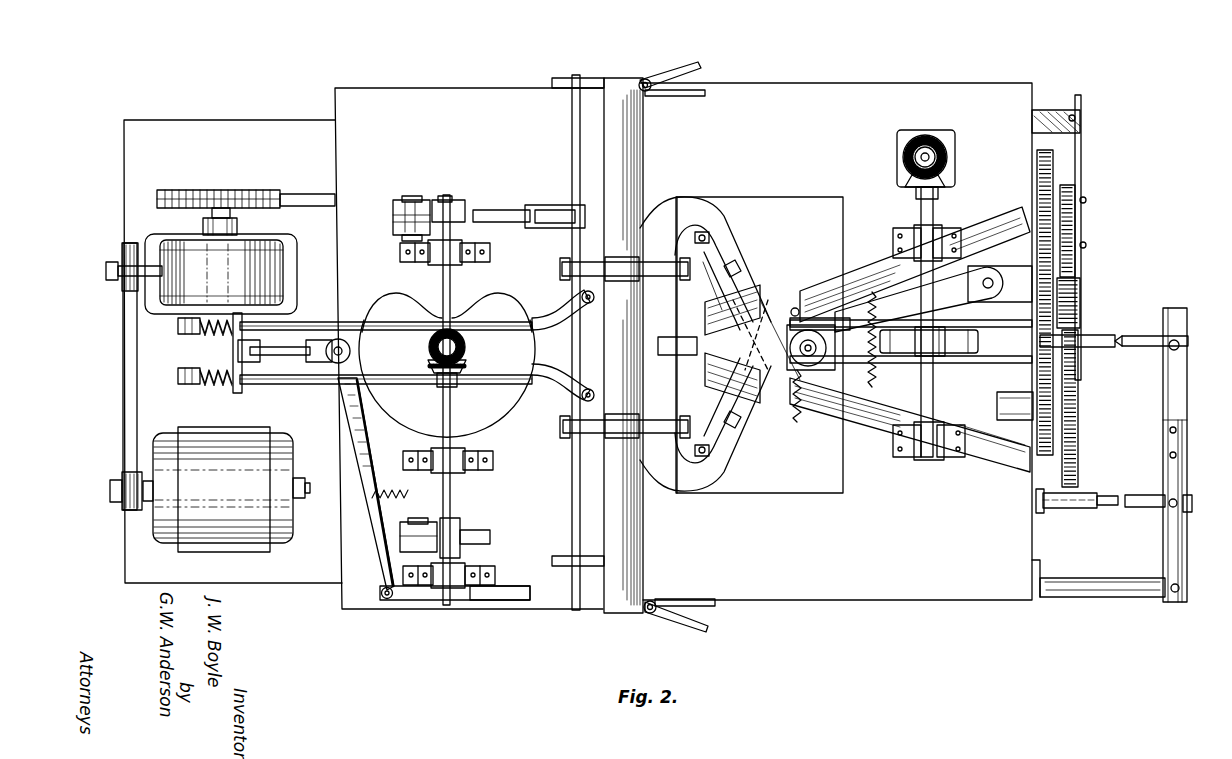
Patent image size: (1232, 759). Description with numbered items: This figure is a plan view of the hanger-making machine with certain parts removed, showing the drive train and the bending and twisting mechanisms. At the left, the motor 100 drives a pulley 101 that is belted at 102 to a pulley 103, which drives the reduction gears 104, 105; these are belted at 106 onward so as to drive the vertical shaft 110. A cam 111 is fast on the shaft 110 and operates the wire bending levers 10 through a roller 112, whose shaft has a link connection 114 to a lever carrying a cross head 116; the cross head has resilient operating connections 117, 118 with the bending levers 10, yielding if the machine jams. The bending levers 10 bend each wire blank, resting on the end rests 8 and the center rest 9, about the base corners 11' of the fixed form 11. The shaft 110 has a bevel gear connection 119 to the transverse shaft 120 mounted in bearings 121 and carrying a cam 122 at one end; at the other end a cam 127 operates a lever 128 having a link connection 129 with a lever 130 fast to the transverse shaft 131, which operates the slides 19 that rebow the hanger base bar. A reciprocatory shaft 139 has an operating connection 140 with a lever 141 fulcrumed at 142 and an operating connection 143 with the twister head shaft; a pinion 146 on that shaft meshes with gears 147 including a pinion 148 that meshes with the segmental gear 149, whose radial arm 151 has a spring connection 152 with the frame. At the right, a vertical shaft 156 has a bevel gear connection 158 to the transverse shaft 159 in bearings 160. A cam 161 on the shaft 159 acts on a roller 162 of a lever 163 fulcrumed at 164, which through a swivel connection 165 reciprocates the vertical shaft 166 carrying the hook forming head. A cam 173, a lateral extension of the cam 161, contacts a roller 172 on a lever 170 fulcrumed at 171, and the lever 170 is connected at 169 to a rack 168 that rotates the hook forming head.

The end rests 8 is at (662, 72).
The center rest 9 is at (672, 350).
The wire bending levers 10 is at (726, 226).
The fixed form 11 is at (749, 335).
The base corners 11' is at (748, 369).
The slides 19 is at (655, 264).
The motor 100 is at (231, 489).
The pulley 101 is at (118, 486).
The belt 102 is at (124, 336).
The pulley 103 is at (112, 264).
The reduction gear 104 is at (180, 250).
The reduction gear 105 is at (222, 190).
The belt 106 is at (304, 192).
The vertical shaft 110 is at (432, 338).
The cam 111 is at (490, 408).
The roller 112 is at (332, 366).
The link connection 114 is at (288, 358).
The cross head 116 is at (238, 390).
The resilient operating connection 117 is at (227, 344).
The resilient operating connection 118 is at (372, 324).
The bevel gear connection 119 is at (466, 360).
The transverse shaft 120 is at (441, 272).
The bearings 121 is at (458, 262).
The cam 122 is at (472, 538).
The cam 127 is at (460, 208).
The lever 128 is at (418, 202).
The link connection 129 is at (503, 212).
The lever 130 is at (572, 213).
The transverse shaft 131 is at (572, 104).
The reciprocatory shaft 139 is at (1144, 511).
The operating connection 140 is at (1180, 498).
The lever 141 is at (1184, 404).
The fulcrum 142 is at (1173, 594).
The operating connection 143 is at (1180, 340).
The pinion 146 is at (1070, 350).
The gears 147 is at (1072, 405).
The pinion 148 is at (1098, 336).
The segmental gear 149 is at (1057, 247).
The radial arm 151 is at (1084, 160).
The spring connection 152 is at (1082, 118).
The vertical shaft 156 is at (952, 157).
The bevel gear connection 158 is at (928, 148).
The transverse shaft 159 is at (934, 200).
The bearings 160 is at (905, 230).
The cam 161 is at (901, 354).
The roller 162 is at (938, 360).
The lever 163 is at (826, 318).
The fulcrum 164 is at (1010, 392).
The swivel connection 165 is at (806, 370).
The vertically reciprocatory shaft 166 is at (800, 372).
The rack 168 is at (806, 409).
The connection 169 is at (793, 308).
The lever 170 is at (858, 290).
The fulcrum 171 is at (982, 271).
The roller 172 is at (870, 318).
The cam 173 is at (945, 320).